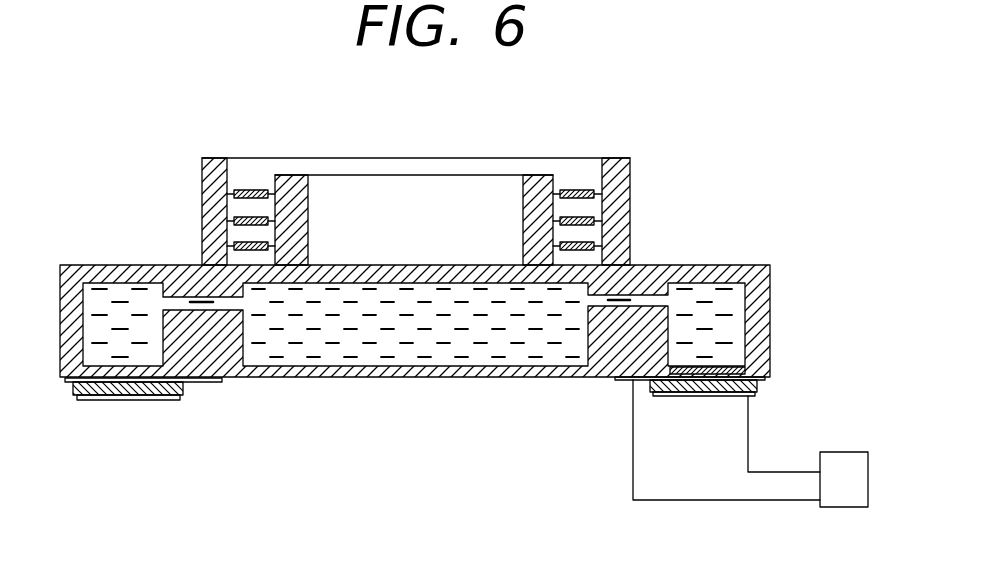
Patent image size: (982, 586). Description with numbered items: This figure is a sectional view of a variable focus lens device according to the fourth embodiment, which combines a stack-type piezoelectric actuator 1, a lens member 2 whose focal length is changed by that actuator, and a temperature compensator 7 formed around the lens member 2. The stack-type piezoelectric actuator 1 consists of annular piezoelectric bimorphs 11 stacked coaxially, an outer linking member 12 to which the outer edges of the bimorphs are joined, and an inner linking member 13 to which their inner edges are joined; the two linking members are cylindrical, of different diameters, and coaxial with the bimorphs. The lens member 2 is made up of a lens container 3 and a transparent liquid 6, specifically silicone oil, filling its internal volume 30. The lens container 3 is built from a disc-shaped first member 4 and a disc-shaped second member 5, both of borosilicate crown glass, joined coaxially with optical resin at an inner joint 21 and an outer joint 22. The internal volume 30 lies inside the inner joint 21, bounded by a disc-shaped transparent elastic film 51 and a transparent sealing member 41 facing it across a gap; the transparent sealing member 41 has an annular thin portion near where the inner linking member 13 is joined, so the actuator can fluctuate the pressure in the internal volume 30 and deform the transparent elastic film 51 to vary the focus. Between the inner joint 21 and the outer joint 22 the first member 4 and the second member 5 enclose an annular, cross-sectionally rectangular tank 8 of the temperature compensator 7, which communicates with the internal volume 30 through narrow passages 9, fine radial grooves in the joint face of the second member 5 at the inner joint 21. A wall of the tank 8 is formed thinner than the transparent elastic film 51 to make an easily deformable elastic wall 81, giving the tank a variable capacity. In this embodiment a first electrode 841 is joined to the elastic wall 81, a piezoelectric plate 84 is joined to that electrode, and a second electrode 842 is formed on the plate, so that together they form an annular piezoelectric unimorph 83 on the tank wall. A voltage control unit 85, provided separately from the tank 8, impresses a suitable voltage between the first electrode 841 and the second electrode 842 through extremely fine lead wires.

The stack-type piezoelectric actuator 1 is at (652, 158).
The lens member 2 is at (448, 300).
The lens container 3 is at (383, 372).
The first member 4 is at (433, 192).
The transparent sealing member 41 is at (427, 275).
The second member 5 is at (770, 287).
The transparent elastic film 51 is at (322, 368).
The transparent liquid 6 is at (518, 337).
The temperature compensator 7 is at (728, 455).
The tank 8 is at (703, 236).
The elastic wall 81 is at (718, 370).
The piezoelectric unimorph 83 is at (692, 409).
The piezoelectric plate 84 is at (760, 386).
The first electrode 841 is at (622, 384).
The second electrode 842 is at (757, 395).
The voltage control unit 85 is at (813, 473).
The narrow passages 9 is at (220, 303).
The piezoelectric bimorphs 11 is at (255, 188).
The outer linking member 12 is at (202, 195).
The inner linking member 13 is at (308, 207).
The inner joint 21 is at (644, 251).
The outer joint 22 is at (750, 236).
The internal volume 30 is at (454, 344).